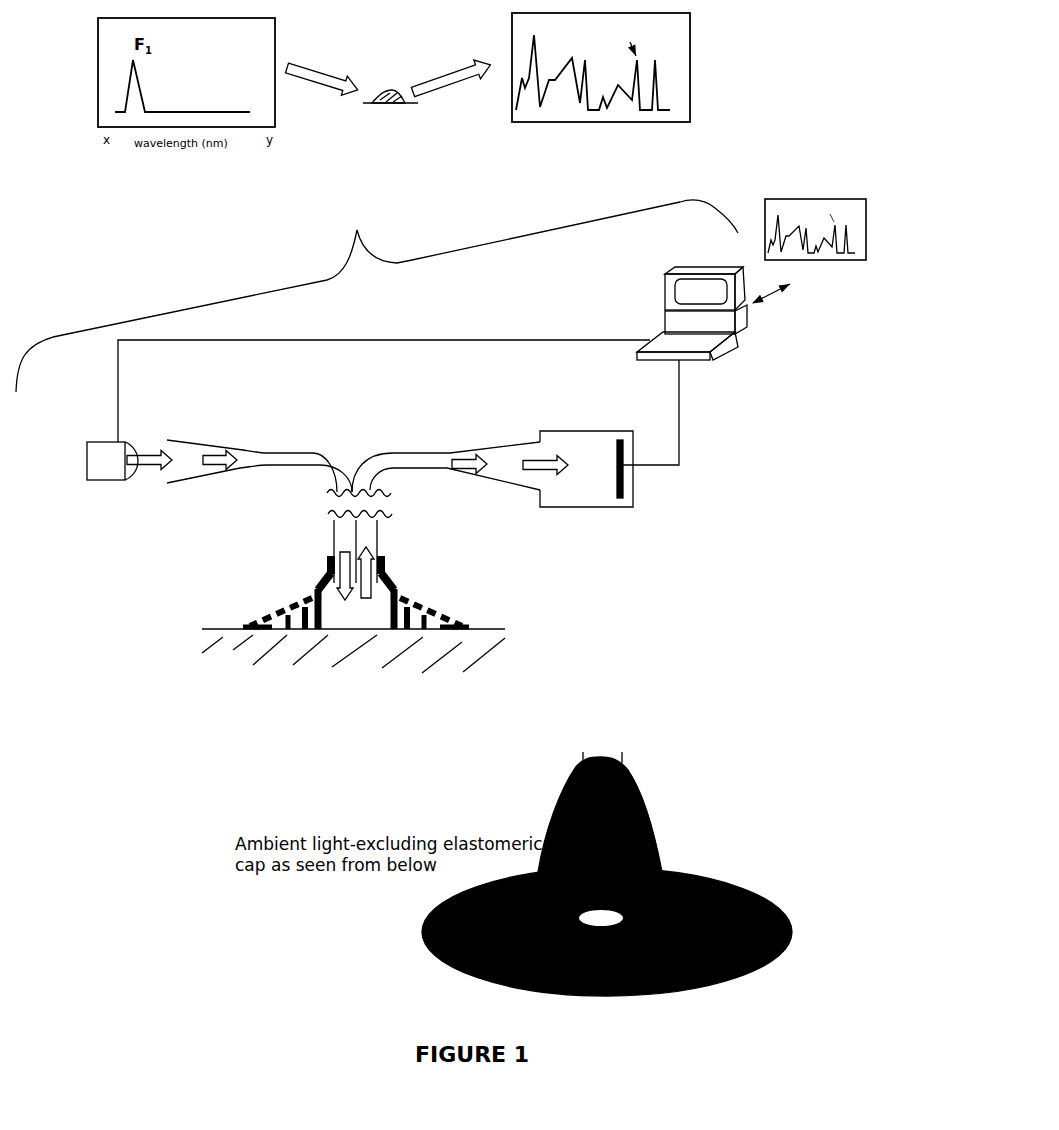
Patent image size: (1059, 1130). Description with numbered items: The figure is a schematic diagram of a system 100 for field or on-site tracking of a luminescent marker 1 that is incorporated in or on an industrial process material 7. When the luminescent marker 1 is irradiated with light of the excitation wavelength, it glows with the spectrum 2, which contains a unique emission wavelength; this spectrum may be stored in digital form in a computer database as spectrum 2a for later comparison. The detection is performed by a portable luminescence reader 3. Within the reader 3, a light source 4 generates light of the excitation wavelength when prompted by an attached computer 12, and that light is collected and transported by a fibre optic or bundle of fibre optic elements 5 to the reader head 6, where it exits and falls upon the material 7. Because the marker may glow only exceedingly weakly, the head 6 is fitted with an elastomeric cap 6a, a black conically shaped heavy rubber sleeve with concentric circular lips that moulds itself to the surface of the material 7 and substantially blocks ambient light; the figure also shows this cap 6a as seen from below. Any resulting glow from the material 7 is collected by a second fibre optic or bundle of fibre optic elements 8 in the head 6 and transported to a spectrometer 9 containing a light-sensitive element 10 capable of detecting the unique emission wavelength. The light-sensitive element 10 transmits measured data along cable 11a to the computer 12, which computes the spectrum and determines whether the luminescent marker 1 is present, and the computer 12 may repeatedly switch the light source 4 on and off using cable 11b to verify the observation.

The luminescent marker 1 is at (390, 109).
The spectrum 2 is at (601, 99).
The stored spectrum 2a is at (815, 225).
The portable luminescence reader 3 is at (377, 296).
The light source 4 is at (87, 437).
The fibre optic or bundle of fibre optic elements 5 is at (279, 446).
The reader head 6 is at (323, 533).
The elastomeric cap 6a is at (307, 590).
The industrial process material 7 is at (353, 658).
The second fibre optic or bundle of fibre optic elements 8 is at (424, 446).
The spectrometer 9 is at (638, 516).
The light-sensitive element 10 is at (606, 446).
The cable 11a is at (673, 412).
The cable 11b is at (384, 380).
The computer 12 is at (713, 301).
The system 100 is at (466, 619).